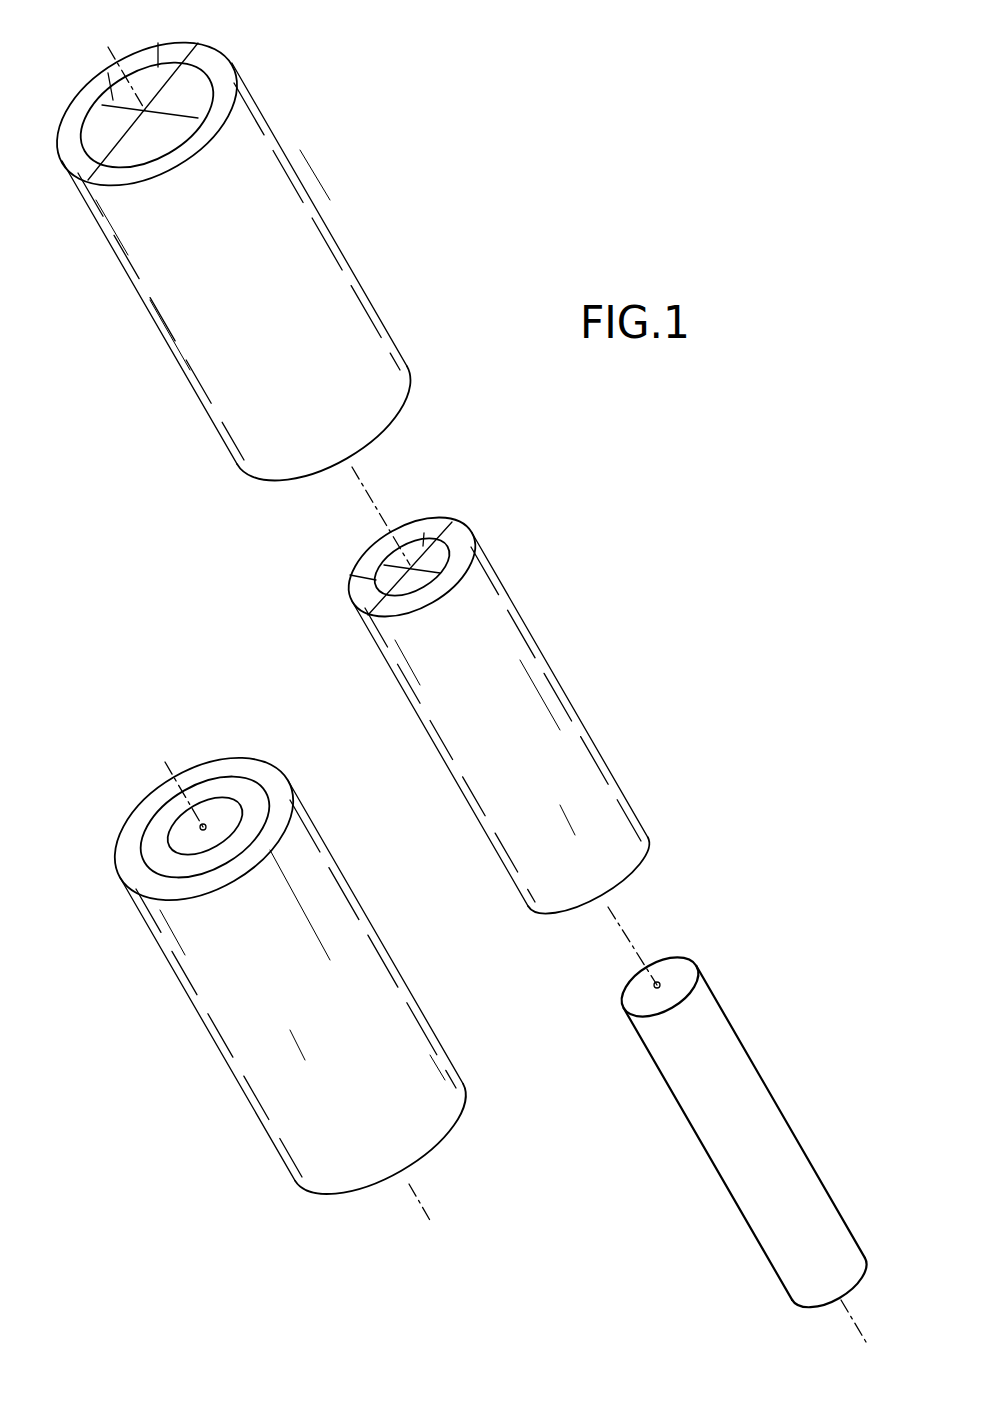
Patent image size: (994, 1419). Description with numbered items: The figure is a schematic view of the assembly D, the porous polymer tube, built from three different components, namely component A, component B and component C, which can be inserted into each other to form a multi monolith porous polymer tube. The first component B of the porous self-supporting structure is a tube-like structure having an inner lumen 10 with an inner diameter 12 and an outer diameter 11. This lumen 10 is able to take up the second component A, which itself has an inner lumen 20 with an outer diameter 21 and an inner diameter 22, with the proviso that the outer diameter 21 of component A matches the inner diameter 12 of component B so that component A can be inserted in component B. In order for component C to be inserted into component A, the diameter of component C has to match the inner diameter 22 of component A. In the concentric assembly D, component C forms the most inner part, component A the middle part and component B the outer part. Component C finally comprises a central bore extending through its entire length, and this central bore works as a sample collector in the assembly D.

The inner lumen 10 is at (170, 130).
The outer diameter 11 is at (158, 43).
The inner diameter 12 is at (108, 73).
The inner lumen 20 is at (432, 557).
The outer diameter 21 is at (423, 540).
The inner diameter 22 is at (374, 581).
The second component A is at (495, 807).
The first component B is at (192, 347).
The third component C is at (735, 1147).
The assembly D is at (248, 1047).